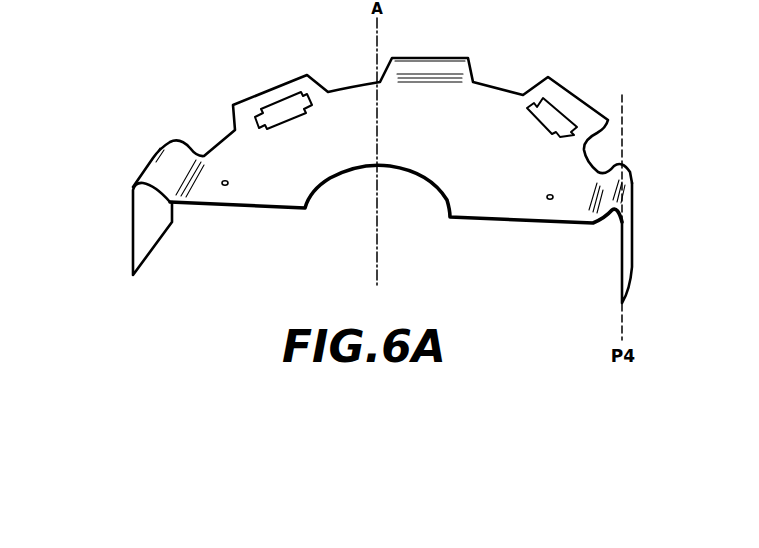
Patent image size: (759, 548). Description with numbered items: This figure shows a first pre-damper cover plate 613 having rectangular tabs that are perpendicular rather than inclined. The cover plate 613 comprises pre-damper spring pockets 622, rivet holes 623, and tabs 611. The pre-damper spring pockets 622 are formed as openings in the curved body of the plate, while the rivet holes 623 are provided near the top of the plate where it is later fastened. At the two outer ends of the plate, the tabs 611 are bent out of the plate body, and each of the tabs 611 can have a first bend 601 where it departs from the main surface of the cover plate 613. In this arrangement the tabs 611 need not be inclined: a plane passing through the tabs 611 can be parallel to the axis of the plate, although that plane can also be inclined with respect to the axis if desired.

The first bend 601 is at (161, 157).
The tabs 611 is at (150, 230).
The first pre-damper cover plate 613 is at (266, 266).
The pre-damper spring pockets 622 is at (563, 117).
The rivet holes 623 is at (425, 95).